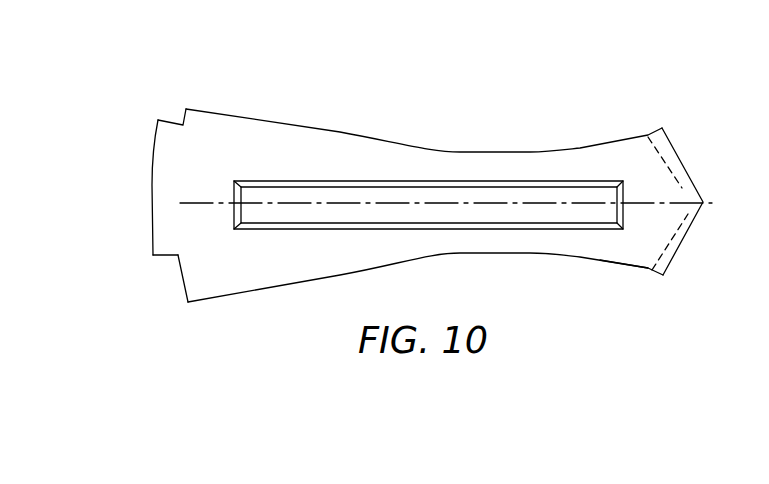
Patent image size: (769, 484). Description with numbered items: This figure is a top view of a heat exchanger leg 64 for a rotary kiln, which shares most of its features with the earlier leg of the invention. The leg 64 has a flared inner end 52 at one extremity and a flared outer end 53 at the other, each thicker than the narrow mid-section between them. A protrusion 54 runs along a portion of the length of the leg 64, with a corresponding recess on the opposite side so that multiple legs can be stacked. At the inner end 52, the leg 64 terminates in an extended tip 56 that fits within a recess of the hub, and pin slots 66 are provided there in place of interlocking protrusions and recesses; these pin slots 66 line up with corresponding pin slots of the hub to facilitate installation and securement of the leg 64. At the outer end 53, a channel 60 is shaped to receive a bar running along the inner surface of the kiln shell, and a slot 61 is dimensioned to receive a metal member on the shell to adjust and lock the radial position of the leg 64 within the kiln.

The leg 64 is at (373, 107).
The slot 61 is at (172, 115).
The channel 60 is at (170, 275).
The flared outer end 53 is at (179, 302).
The protrusion 54 is at (323, 213).
The extended tip 56 is at (703, 202).
The pin slots 66 is at (673, 163).
The flared inner end 52 is at (627, 268).